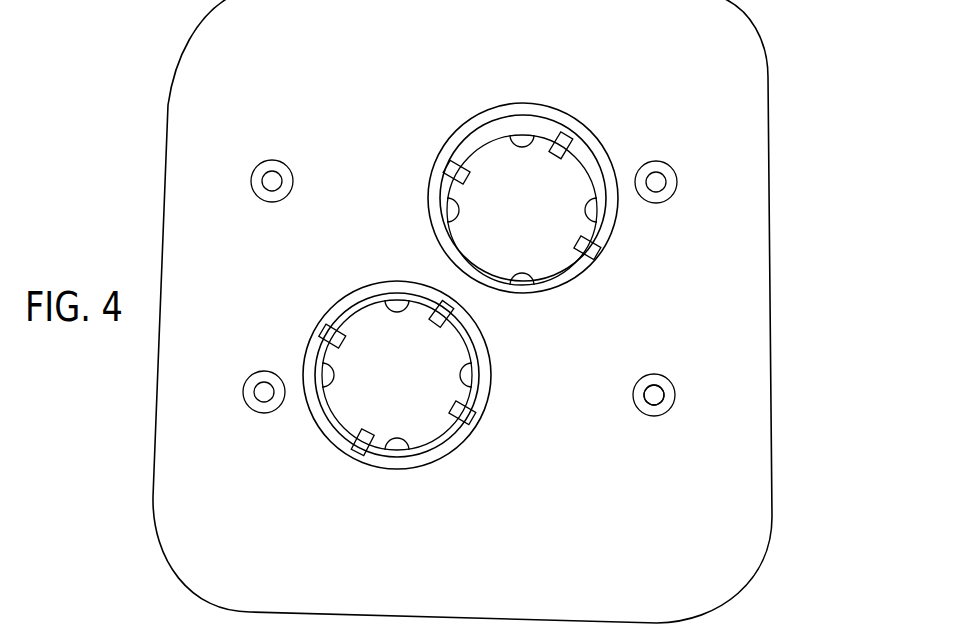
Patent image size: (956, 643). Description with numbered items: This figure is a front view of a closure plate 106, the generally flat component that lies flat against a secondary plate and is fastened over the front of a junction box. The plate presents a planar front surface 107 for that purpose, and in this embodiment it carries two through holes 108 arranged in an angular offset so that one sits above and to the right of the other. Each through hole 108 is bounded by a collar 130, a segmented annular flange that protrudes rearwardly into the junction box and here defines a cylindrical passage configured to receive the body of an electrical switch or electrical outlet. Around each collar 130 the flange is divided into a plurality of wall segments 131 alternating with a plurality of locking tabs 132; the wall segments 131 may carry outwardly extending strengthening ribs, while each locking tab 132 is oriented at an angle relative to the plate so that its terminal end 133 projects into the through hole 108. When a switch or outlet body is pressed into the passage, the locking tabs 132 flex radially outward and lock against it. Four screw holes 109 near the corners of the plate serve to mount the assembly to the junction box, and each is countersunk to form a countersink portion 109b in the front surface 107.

The closure plate 106 is at (763, 72).
The front surface 107 is at (722, 282).
The through hole 108 is at (506, 148).
The screw hole 109 is at (655, 172).
The countersink portion 109b is at (653, 400).
The collar 130 is at (337, 396).
The wall segment 131 is at (472, 132).
The locking tab 132 is at (462, 172).
The terminal end 133 is at (345, 323).